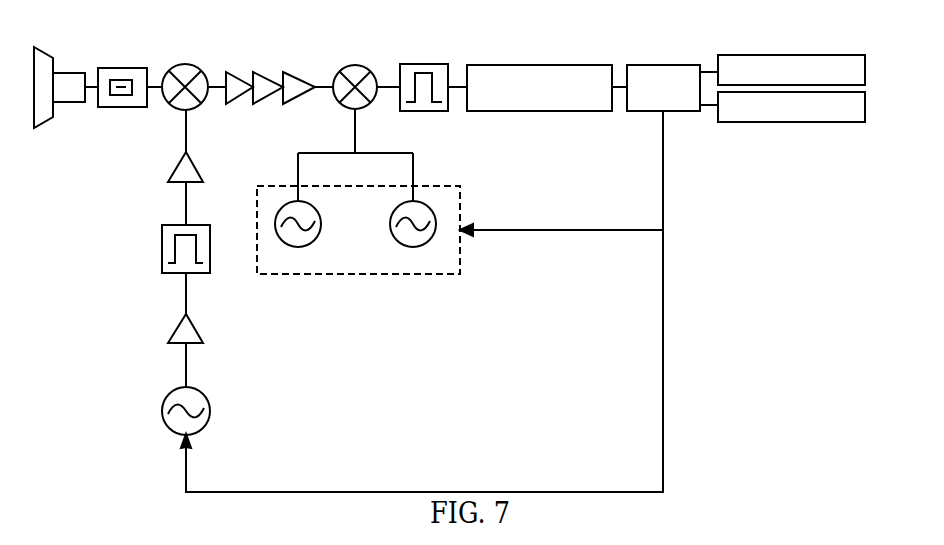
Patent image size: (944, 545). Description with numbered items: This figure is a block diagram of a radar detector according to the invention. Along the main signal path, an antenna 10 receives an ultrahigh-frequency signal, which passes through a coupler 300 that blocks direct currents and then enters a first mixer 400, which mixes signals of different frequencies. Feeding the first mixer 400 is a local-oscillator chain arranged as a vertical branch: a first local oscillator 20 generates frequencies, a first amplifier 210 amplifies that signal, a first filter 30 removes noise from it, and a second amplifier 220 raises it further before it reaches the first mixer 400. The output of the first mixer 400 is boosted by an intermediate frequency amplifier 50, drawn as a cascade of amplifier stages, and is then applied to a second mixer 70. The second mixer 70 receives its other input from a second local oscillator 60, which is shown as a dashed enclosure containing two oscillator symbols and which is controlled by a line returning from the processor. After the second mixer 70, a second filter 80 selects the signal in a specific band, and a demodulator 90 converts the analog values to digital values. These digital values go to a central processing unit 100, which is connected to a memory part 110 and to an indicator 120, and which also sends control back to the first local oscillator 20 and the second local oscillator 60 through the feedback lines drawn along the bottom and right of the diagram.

The antenna 10 is at (59, 83).
The coupler 300 is at (122, 73).
The first mixer 400 is at (185, 74).
The intermediate frequency amplifier 50 is at (270, 71).
The second mixer 70 is at (355, 74).
The second filter 80 is at (424, 75).
The demodulator 90 is at (539, 75).
The central processing unit 100 is at (663, 75).
The memory part 110 is at (810, 70).
The indicator 120 is at (810, 107).
The second amplifier 220 is at (164, 167).
The first filter 30 is at (168, 249).
The first amplifier 210 is at (165, 328).
The first local oscillator 20 is at (171, 411).
The second local oscillator 60 is at (358, 241).